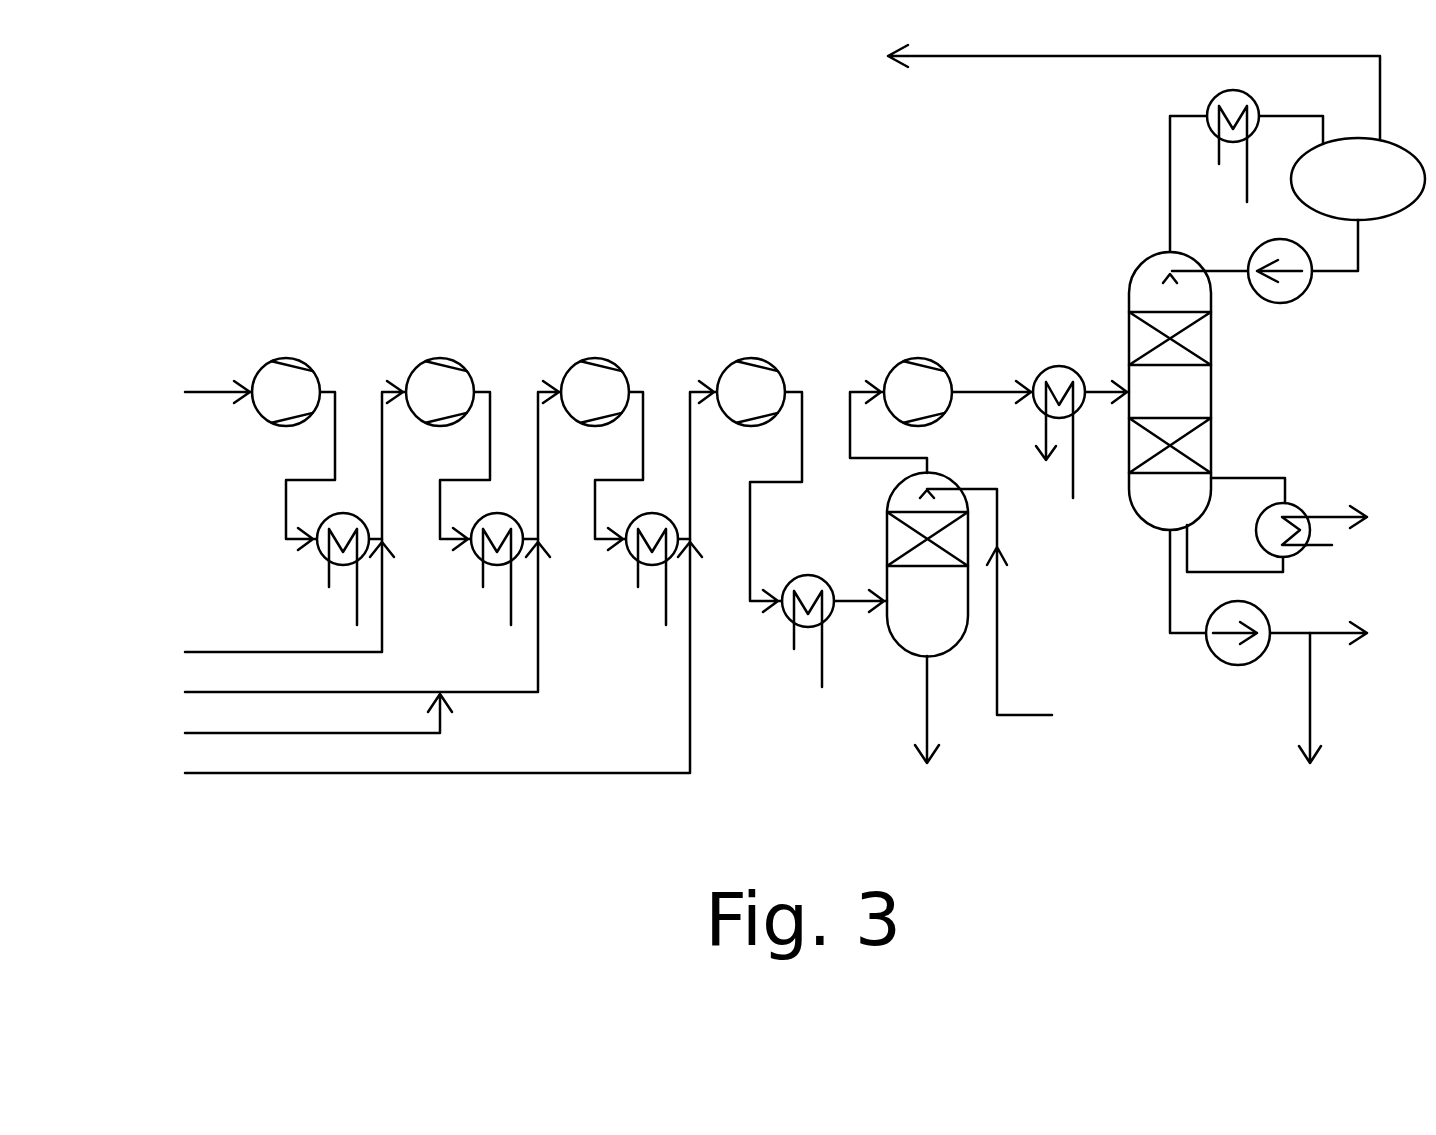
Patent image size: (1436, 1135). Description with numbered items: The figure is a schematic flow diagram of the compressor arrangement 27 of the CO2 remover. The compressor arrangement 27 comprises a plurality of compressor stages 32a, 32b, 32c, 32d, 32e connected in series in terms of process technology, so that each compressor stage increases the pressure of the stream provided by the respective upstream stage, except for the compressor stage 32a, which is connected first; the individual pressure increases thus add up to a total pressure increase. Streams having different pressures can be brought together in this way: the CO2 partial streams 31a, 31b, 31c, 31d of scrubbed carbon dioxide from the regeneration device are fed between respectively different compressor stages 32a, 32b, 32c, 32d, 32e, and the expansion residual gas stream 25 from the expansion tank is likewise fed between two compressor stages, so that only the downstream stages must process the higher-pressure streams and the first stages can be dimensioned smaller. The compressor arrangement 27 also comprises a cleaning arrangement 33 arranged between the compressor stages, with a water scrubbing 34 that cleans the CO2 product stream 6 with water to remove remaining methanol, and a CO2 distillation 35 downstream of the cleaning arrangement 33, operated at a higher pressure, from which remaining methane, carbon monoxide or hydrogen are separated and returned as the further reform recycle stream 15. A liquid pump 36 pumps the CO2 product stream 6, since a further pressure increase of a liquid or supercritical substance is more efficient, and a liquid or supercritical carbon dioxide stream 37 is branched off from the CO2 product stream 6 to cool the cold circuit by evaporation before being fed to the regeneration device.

The CO2 product stream 6 is at (1327, 632).
The further reform recycle stream 15 is at (970, 57).
The expansion residual gas stream 25 is at (197, 735).
The compressor arrangement 27 is at (799, 766).
The CO2 partial stream 31a is at (283, 775).
The CO2 partial stream 31b is at (200, 692).
The CO2 partial stream 31c is at (238, 652).
The CO2 partial stream 31d is at (210, 388).
The compressor stage 32a is at (283, 355).
The compressor stage 32b is at (443, 355).
The compressor stage 32c is at (593, 357).
The compressor stage 32d is at (748, 357).
The compressor stage 32e is at (923, 357).
The cleaning arrangement 33 is at (1156, 458).
The water scrubbing 34 is at (950, 655).
The CO2 distillation 35 is at (1128, 297).
The liquid pump 36 is at (1217, 660).
The carbon dioxide stream 37 is at (1312, 710).